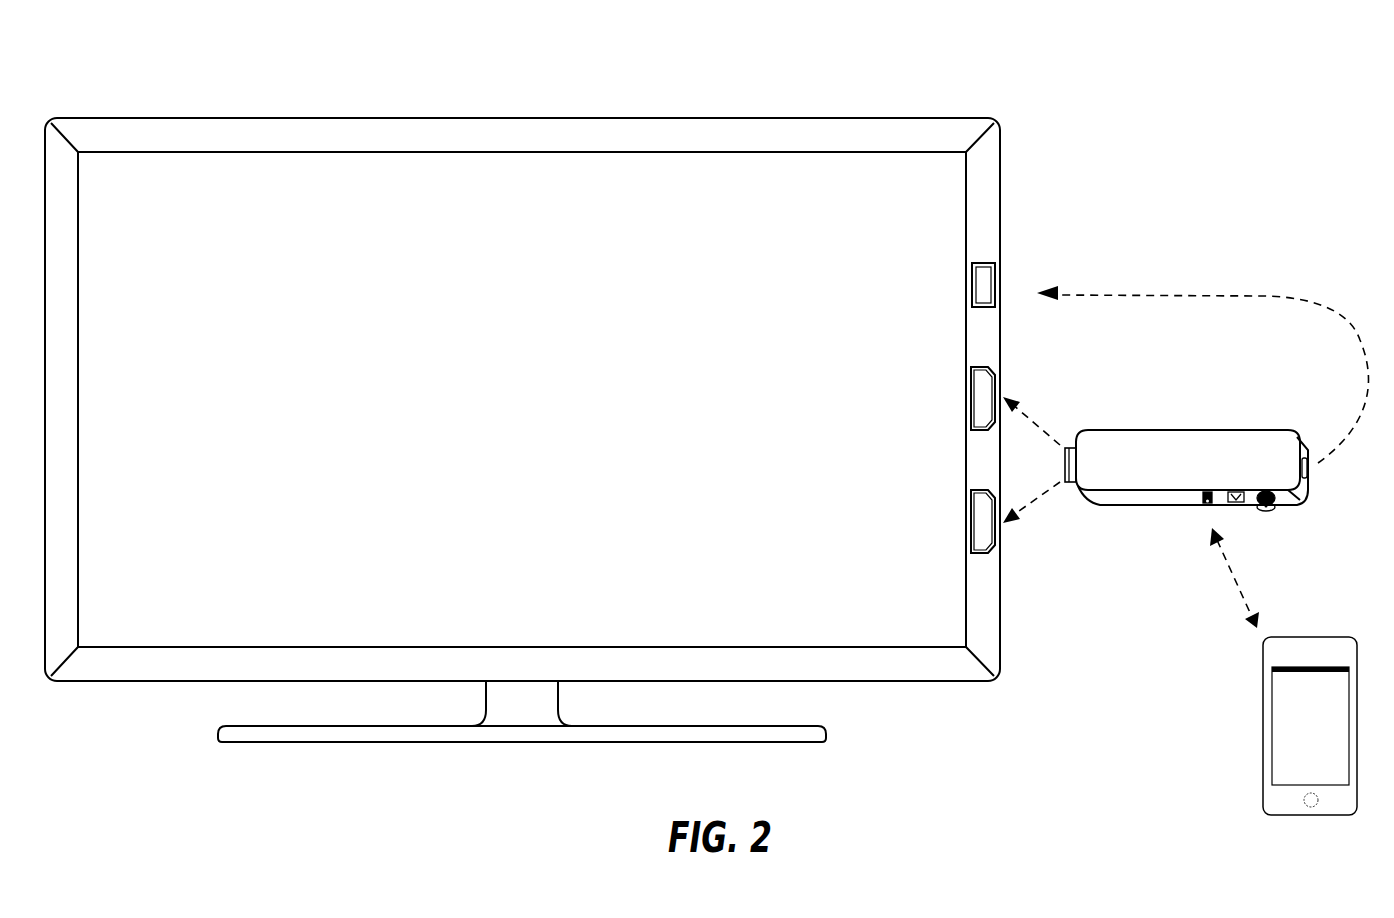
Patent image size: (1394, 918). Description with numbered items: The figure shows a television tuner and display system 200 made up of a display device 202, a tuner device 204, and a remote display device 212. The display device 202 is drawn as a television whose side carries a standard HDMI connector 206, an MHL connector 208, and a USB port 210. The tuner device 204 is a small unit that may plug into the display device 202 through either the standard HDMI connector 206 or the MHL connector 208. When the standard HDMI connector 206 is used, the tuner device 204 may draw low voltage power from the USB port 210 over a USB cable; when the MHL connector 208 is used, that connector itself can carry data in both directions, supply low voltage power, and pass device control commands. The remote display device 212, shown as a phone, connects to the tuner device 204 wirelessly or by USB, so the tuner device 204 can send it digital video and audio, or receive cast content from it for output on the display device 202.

The television tuner and display system 200 is at (994, 29).
The display device 202 is at (563, 117).
The tuner device 204 is at (1213, 430).
The standard HDMI connector 206 is at (988, 367).
The MHL connector 208 is at (980, 553).
The USB port 210 is at (983, 263).
The remote display device 212 is at (1285, 637).